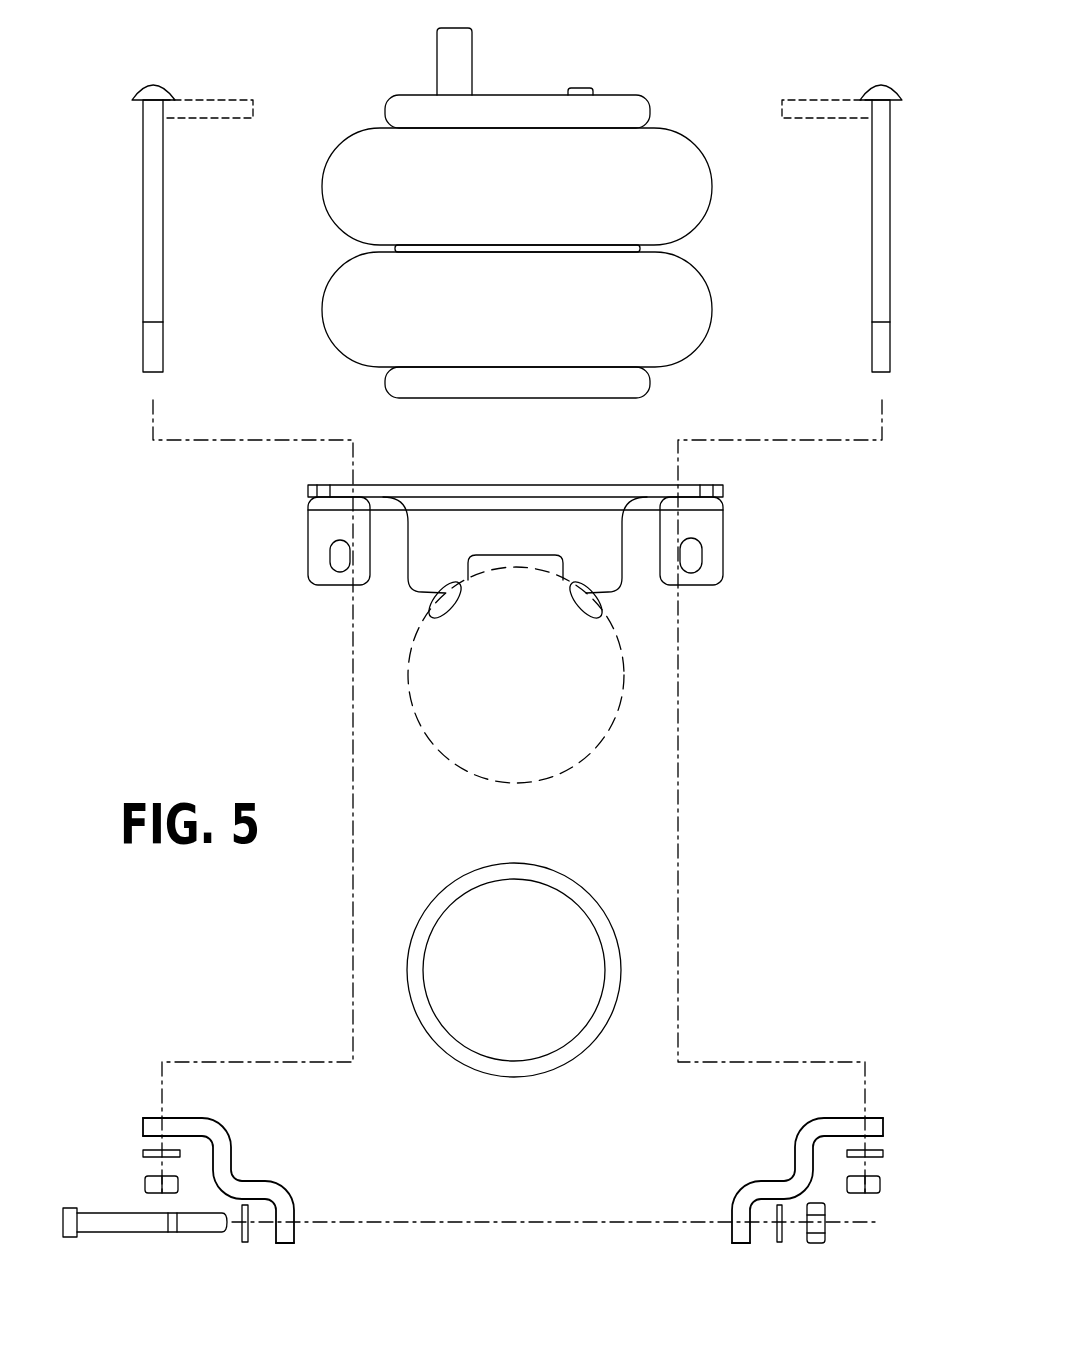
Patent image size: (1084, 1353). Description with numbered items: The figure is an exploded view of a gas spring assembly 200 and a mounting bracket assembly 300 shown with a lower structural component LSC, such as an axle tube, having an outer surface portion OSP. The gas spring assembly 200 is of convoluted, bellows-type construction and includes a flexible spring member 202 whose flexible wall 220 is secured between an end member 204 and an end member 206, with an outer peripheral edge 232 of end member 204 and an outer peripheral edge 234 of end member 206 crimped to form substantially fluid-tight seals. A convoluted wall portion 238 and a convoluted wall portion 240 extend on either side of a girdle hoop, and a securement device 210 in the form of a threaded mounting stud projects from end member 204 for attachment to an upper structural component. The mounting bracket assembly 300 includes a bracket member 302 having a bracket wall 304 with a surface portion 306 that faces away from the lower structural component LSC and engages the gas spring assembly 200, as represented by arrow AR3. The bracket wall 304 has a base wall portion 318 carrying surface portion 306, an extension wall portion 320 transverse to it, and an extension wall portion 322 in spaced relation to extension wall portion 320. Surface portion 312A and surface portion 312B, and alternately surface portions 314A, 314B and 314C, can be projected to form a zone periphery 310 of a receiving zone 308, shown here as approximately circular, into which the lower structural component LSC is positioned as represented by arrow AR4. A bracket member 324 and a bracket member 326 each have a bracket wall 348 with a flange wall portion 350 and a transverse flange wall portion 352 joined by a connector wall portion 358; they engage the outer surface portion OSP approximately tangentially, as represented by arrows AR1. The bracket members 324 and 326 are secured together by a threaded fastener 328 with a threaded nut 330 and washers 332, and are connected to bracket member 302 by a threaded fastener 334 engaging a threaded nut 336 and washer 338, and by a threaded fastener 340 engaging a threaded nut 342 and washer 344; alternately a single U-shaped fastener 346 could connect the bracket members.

The gas spring assembly 200 is at (515, 202).
The flexible spring member 202 is at (515, 203).
The end member 204 is at (513, 95).
The end member 206 is at (504, 361).
The securement device 210 is at (443, 62).
The flexible wall 220 is at (703, 224).
The outer peripheral edge 232 is at (652, 112).
The outer peripheral edge 234 is at (651, 384).
The convoluted wall portion 238 is at (327, 163).
The convoluted wall portion 240 is at (325, 285).
The mounting bracket assembly 300 is at (494, 582).
The bracket member 302 is at (541, 533).
The bracket wall 304 is at (440, 483).
The surface portion 306 is at (574, 485).
The receiving zone 308 is at (410, 666).
The zone periphery 310 is at (624, 736).
The surface portion 312A is at (605, 617).
The surface portion 312B is at (430, 617).
The surface portion 314A is at (513, 555).
The surface portion 314B is at (566, 572).
The surface portion 314C is at (467, 572).
The base wall portion 318 is at (726, 492).
The extension wall portion 320 is at (614, 520).
The extension wall portion 322 is at (618, 585).
The bracket member 324 is at (203, 1101).
The bracket member 326 is at (822, 1103).
The threaded fastener 328 is at (125, 1233).
The threaded nut 330 is at (828, 1222).
The washer 332 is at (244, 1243).
The threaded fastener 334 is at (153, 224).
The threaded nut 336 is at (145, 1185).
The washer 338 is at (148, 1150).
The threaded fastener 340 is at (875, 230).
The threaded nut 342 is at (878, 1188).
The washer 344 is at (878, 1152).
The U-shaped fastener 346 is at (203, 110).
The bracket wall 348 is at (238, 1142).
The flange wall portion 350 is at (290, 1235).
The flange wall portion 352 is at (153, 1127).
The connector wall portion 358 is at (228, 1184).
The arrows AR1 is at (253, 1158).
The arrow AR3 is at (517, 466).
The arrow AR4 is at (515, 614).
The lower structural component LSC is at (607, 910).
The outer surface portion OSP is at (618, 946).